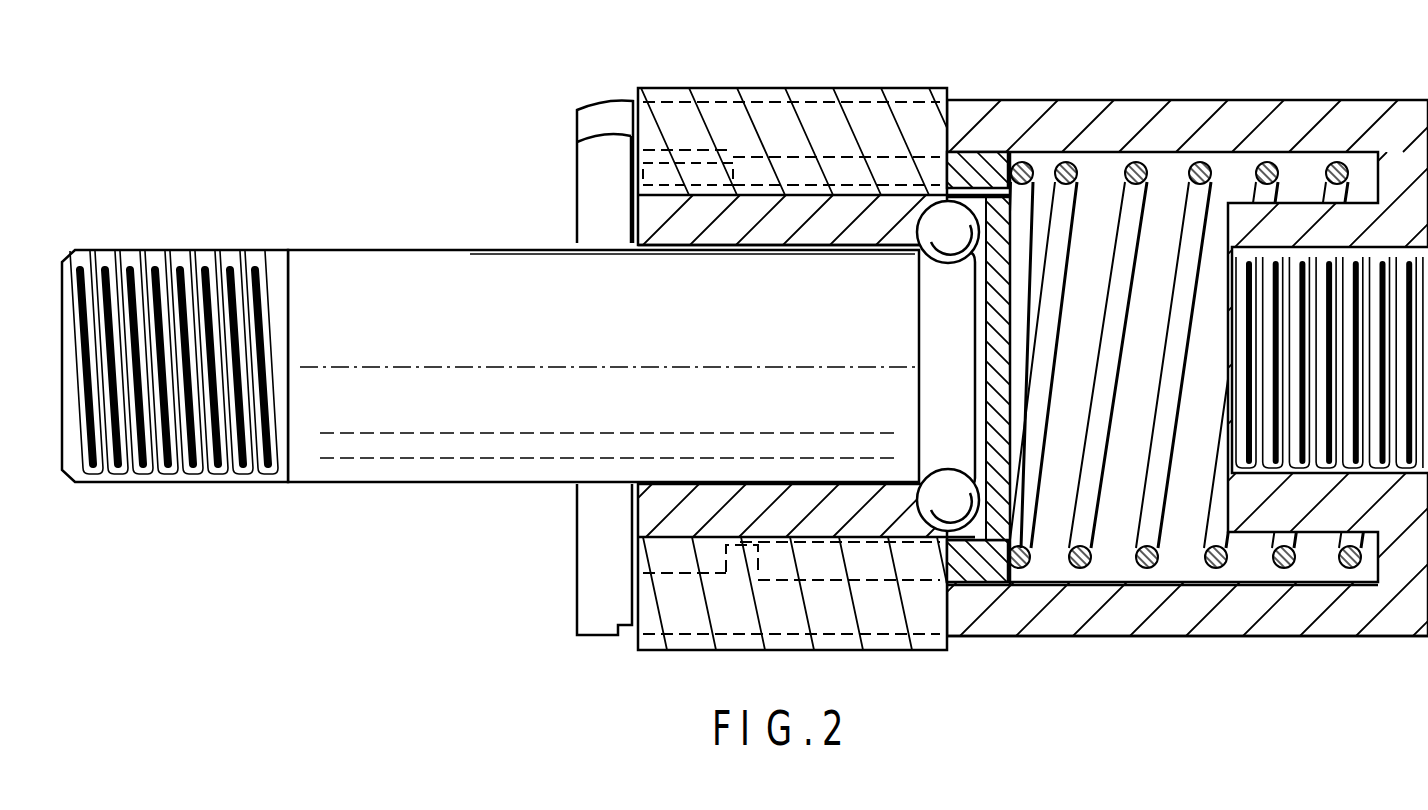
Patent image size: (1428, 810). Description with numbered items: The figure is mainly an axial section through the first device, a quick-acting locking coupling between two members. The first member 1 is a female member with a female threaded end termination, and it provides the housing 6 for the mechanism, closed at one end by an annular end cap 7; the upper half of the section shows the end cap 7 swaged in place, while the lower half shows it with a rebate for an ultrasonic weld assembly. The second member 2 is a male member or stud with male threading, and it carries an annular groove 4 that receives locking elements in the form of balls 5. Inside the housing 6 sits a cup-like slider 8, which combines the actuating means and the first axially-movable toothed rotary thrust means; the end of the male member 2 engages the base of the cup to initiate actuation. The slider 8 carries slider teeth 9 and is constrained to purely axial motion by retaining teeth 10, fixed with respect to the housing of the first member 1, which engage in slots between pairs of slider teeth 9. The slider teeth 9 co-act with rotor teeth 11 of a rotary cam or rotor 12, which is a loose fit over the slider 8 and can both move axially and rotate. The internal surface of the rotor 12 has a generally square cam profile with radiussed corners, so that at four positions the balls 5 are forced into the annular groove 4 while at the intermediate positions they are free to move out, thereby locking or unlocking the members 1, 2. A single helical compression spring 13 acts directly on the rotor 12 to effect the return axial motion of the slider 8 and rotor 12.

The first member 1 is at (1184, 110).
The second member 2 is at (452, 272).
The annular groove 4 is at (945, 342).
The balls 5 is at (930, 255).
The housing 6 is at (1017, 605).
The end cap 7 is at (597, 176).
The cup-like slider 8 is at (813, 218).
The slider teeth 9 is at (681, 165).
The retaining teeth 10 is at (862, 117).
The rotor teeth 11 is at (764, 140).
The rotor 12 is at (986, 152).
The helical compression spring 13 is at (1120, 162).